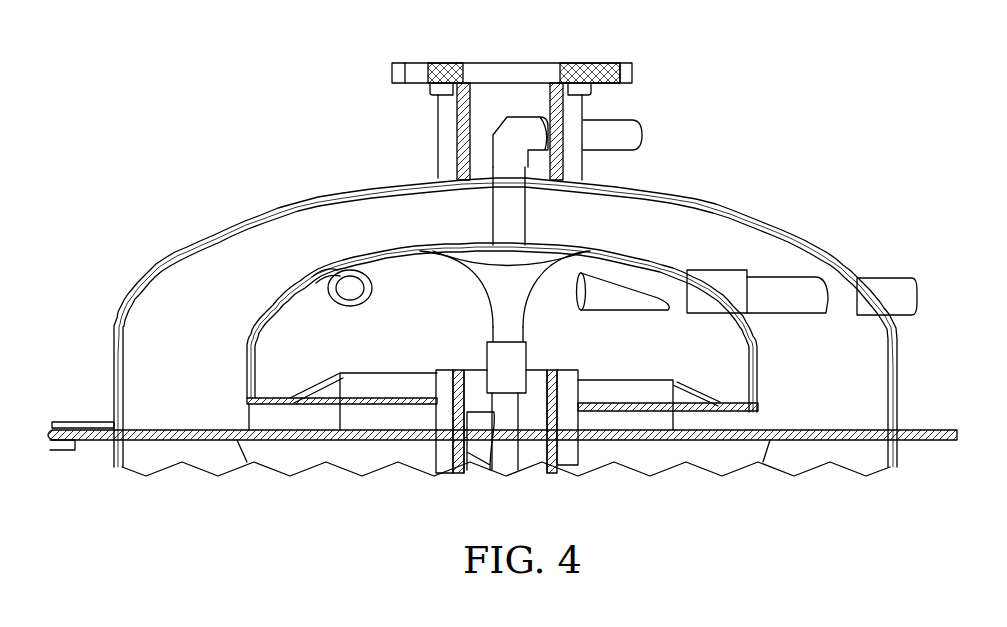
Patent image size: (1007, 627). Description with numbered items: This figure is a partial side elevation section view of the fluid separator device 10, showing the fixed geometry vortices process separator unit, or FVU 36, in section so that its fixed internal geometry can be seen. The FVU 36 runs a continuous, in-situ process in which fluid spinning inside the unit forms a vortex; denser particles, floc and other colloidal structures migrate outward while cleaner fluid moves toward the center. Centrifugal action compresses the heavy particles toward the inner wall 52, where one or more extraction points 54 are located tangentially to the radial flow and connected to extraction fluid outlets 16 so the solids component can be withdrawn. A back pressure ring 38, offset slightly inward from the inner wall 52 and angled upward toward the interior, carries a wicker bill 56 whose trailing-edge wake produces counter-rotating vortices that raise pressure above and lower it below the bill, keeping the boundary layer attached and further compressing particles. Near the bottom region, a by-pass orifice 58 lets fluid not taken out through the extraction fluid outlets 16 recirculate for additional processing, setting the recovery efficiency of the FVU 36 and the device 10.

The fluid separator device 10 is at (505, 249).
The extraction fluid outlets 16 is at (314, 276).
The fixed geometry vortices process separator unit (FVU) 36 is at (305, 345).
The back pressure ring 38 is at (683, 392).
The inner wall 52 is at (645, 273).
The extraction points 54 is at (386, 246).
The wicker bill 56 is at (394, 372).
The by-pass orifice 58 is at (502, 439).